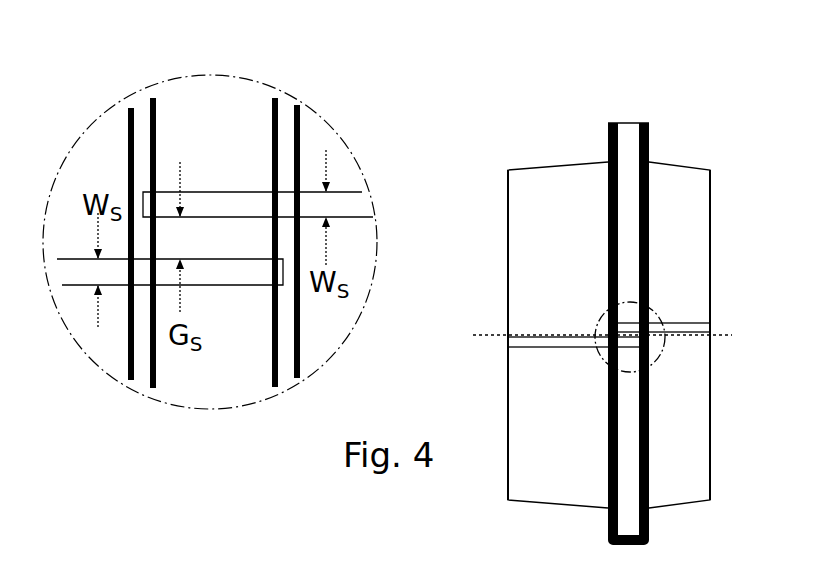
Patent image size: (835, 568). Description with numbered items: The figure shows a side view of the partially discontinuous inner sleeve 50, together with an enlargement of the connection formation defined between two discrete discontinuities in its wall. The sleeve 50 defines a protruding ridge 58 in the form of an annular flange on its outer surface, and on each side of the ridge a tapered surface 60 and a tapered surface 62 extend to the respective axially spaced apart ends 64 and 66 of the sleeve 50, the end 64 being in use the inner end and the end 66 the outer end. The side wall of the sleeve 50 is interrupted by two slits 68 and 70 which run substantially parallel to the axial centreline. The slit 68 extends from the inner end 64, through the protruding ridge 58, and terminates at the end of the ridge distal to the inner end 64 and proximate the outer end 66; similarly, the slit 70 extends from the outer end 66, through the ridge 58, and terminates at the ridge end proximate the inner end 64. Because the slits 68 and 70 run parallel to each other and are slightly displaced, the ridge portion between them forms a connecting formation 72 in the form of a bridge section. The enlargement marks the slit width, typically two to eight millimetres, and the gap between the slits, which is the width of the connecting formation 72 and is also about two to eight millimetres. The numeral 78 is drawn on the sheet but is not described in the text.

The inner sleeve 50 is at (598, 103).
The protruding ridge 58 is at (192, 140).
The tapered surface 60 is at (556, 185).
The tapered surface 62 is at (678, 185).
The sleeve end 64 is at (500, 258).
The sleeve end 66 is at (717, 260).
The slit 68 is at (73, 277).
The slit 70 is at (228, 207).
The connecting formation 72 is at (236, 253).
The element 78 is at (377, 561).